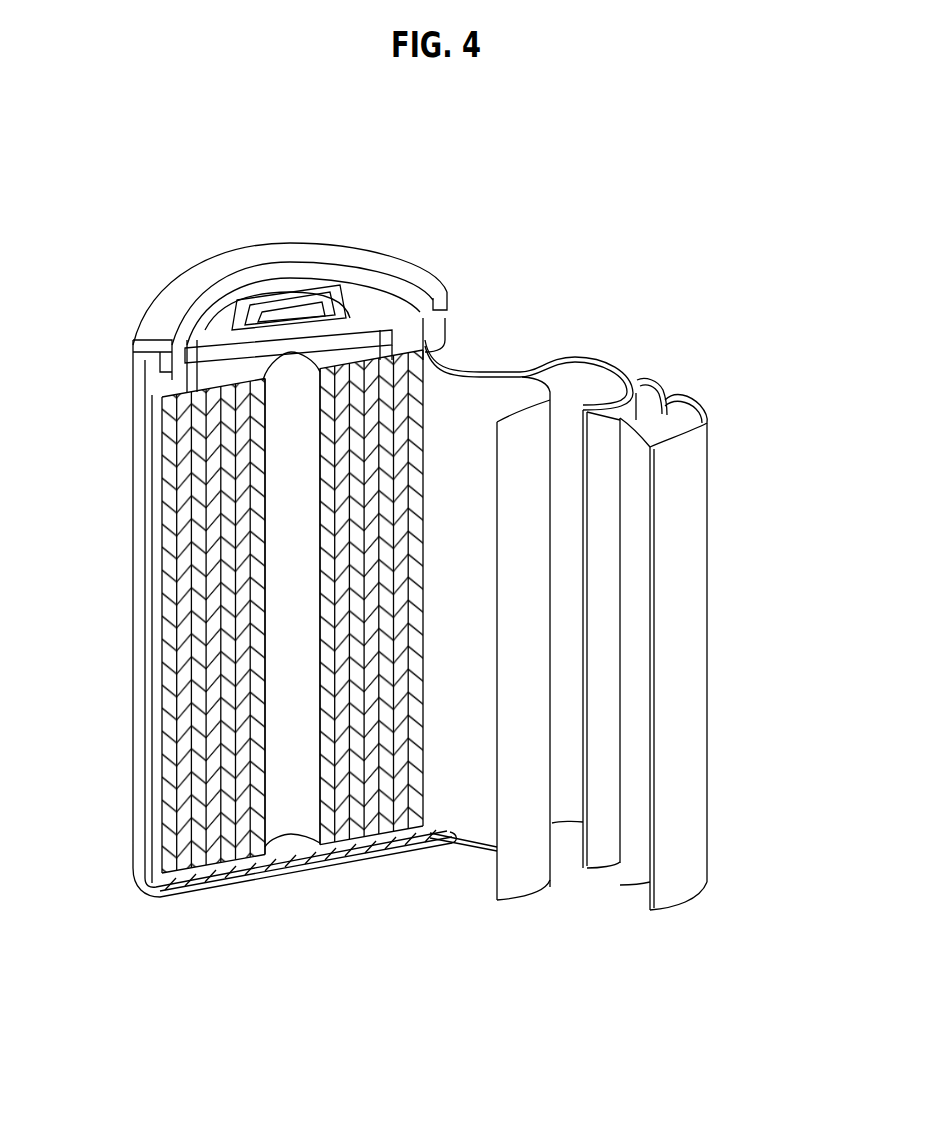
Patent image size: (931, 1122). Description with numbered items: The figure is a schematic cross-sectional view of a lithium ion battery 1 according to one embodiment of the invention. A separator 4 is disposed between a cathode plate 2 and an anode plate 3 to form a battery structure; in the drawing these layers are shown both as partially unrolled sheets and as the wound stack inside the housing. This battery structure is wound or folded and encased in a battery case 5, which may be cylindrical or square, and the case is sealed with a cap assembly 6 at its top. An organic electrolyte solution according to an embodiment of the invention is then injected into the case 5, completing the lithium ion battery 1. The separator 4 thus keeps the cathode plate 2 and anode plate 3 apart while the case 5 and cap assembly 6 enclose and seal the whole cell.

The lithium ion battery 1 is at (680, 328).
The cathode plate 2 is at (693, 517).
The anode plate 3 is at (598, 420).
The separator 4 is at (657, 420).
The battery case 5 is at (133, 822).
The cap assembly 6 is at (302, 278).